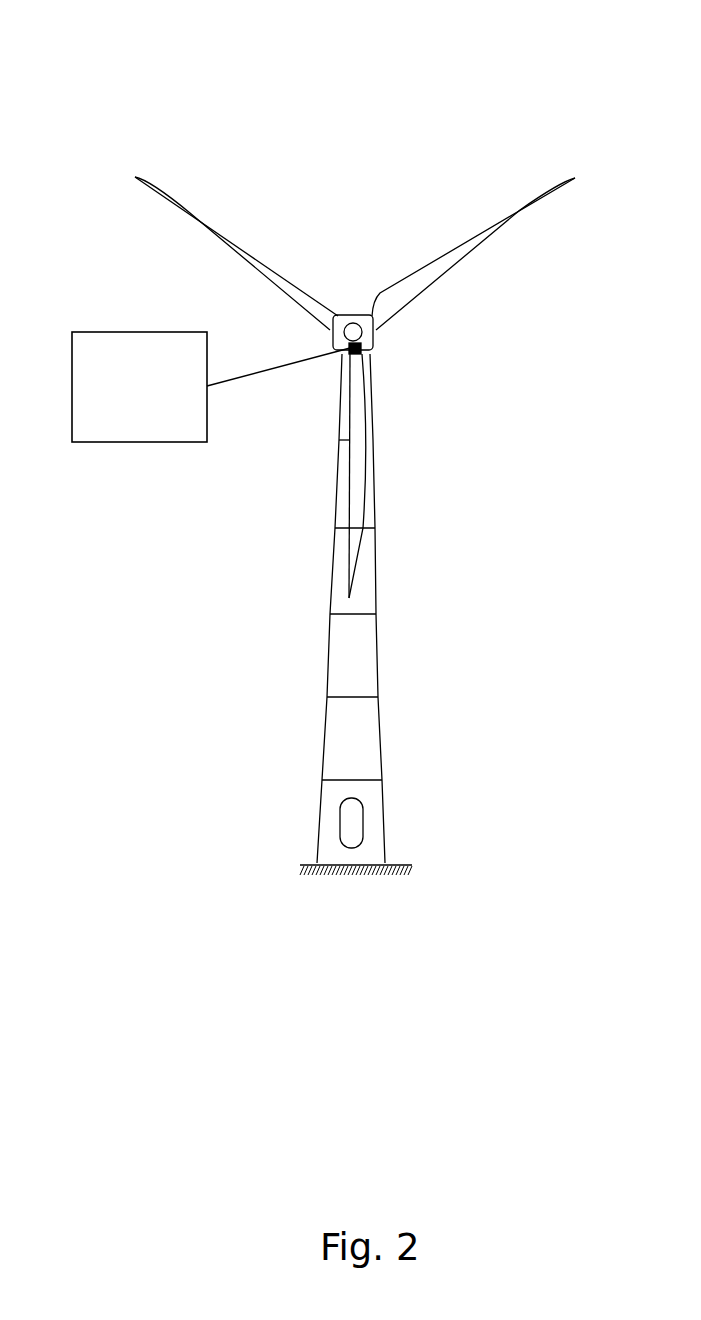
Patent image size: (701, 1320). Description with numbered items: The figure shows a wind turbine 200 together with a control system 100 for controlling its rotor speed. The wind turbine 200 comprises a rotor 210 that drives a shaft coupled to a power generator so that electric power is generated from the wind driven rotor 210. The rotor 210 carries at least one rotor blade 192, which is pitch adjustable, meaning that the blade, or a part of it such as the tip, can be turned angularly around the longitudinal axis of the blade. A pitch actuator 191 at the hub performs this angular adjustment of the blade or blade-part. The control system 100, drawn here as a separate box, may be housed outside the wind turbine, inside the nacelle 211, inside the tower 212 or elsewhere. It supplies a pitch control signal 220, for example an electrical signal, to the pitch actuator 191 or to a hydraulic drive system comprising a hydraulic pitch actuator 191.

The control system 100 is at (88, 327).
The pitch actuator 191 is at (360, 352).
The rotor blade 192 is at (256, 272).
The wind turbine 200 is at (241, 62).
The rotor 210 is at (442, 250).
The nacelle 211 is at (377, 338).
The tower 212 is at (383, 640).
The pitch control signal 220 is at (267, 378).